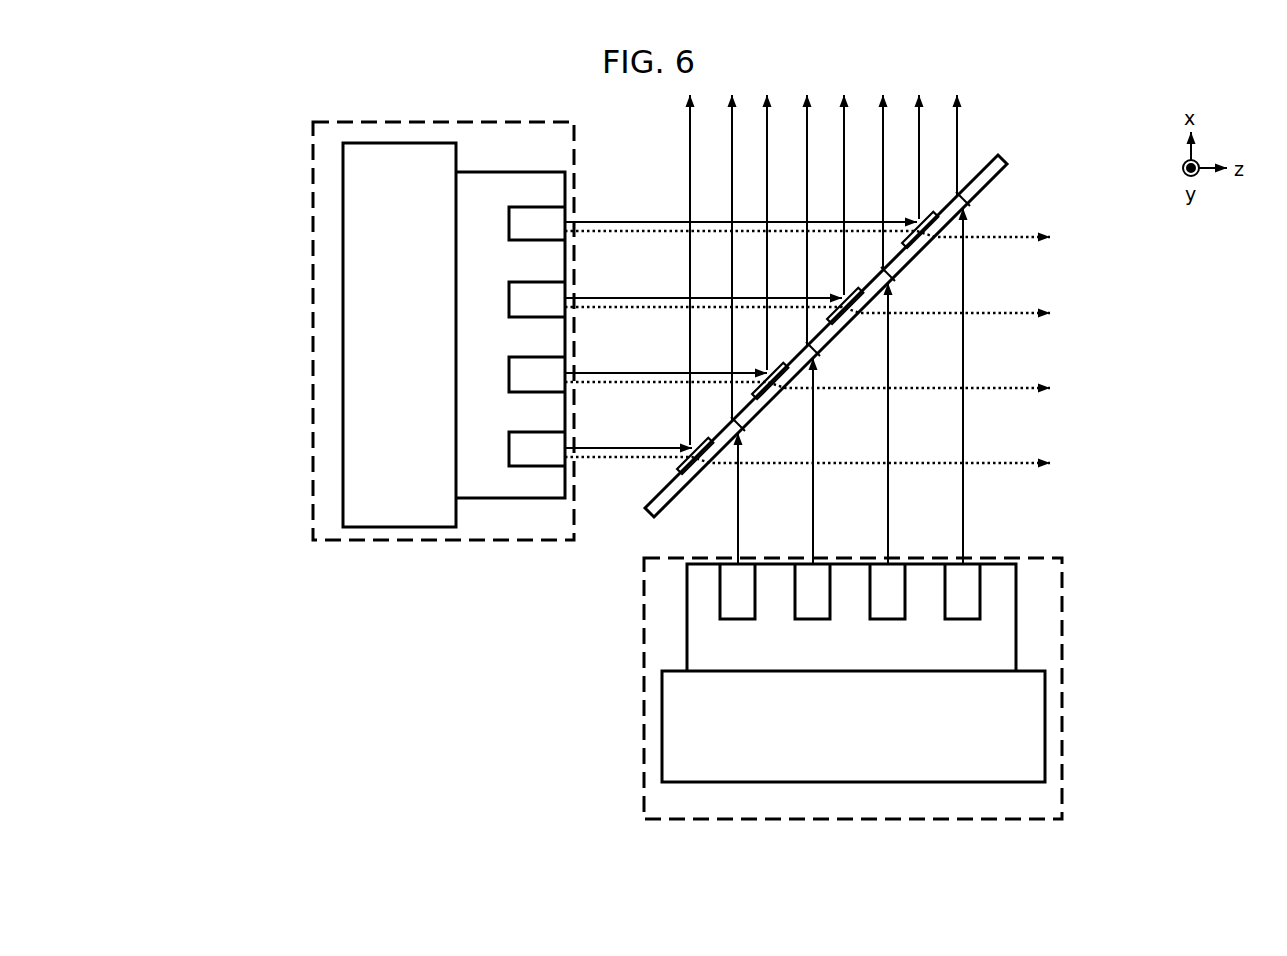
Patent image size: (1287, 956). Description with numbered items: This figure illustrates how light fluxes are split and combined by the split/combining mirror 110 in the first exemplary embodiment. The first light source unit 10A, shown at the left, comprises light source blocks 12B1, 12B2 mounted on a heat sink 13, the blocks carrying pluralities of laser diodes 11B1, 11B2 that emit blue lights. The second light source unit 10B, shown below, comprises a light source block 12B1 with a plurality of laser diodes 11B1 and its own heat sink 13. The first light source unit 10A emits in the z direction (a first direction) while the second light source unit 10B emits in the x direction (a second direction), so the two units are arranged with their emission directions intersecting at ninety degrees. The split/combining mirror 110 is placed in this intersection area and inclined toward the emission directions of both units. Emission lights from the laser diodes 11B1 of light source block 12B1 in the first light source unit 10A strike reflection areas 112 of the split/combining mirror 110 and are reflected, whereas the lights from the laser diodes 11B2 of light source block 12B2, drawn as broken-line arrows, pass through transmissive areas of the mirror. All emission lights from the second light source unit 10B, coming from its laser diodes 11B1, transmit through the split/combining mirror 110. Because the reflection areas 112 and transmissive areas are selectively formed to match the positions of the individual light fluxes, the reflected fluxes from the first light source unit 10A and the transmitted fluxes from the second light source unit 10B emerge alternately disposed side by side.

The first light source unit 10A is at (314, 145).
The second light source unit 10B is at (1063, 606).
The laser diode 11B1 is at (519, 227).
The laser diode 11B2 is at (592, 413).
The light source block 12B1 is at (480, 289).
The light source block 12B2 is at (610, 421).
The heat sink 13 is at (400, 413).
The split/combining mirror 110 is at (998, 156).
The reflection area 112 is at (935, 228).